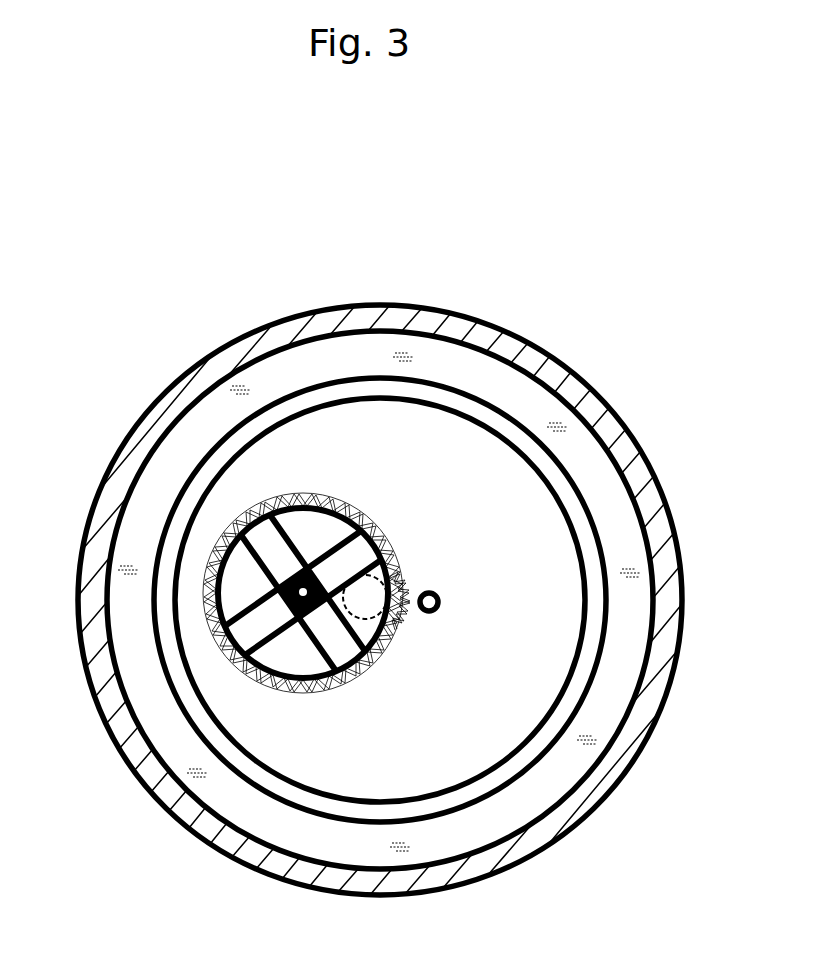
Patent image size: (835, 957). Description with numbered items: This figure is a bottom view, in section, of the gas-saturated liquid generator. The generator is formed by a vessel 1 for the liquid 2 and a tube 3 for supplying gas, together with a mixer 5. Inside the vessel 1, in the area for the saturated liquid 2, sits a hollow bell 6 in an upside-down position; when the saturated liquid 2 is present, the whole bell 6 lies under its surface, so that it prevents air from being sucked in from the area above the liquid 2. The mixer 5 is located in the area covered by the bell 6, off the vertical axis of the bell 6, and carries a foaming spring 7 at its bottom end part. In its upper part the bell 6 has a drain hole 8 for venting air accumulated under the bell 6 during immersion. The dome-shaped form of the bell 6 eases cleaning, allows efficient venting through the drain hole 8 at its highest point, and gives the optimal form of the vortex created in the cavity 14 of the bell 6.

The vessel 1 is at (478, 318).
The liquid 2 is at (612, 510).
The tube 3 is at (408, 617).
The mixer 5 is at (253, 683).
The bell 6 is at (503, 402).
The foaming spring 7 is at (207, 620).
The drain hole 8 is at (438, 596).
The cavity 14 is at (540, 680).